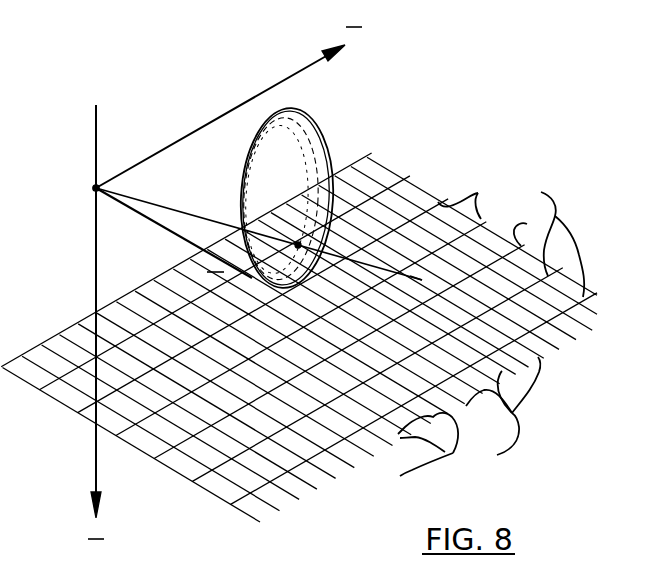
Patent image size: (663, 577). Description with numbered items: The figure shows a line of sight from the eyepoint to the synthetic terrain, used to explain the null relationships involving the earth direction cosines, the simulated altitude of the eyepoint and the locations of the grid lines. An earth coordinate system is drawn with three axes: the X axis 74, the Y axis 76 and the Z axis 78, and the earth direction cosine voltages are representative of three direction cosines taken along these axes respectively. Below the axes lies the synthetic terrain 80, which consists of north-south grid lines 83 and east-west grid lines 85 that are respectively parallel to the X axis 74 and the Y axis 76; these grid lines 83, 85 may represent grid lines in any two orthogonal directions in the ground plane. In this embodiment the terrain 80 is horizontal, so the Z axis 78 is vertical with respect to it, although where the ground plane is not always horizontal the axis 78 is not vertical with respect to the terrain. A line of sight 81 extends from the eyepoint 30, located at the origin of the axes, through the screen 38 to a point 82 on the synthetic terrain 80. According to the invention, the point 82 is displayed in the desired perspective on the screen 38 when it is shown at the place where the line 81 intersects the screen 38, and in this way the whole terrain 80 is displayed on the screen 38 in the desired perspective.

The eyepoint 30 is at (95, 187).
The X axis 74 is at (229, 106).
The Y axis 76 is at (181, 243).
The Z axis 78 is at (93, 467).
The screen 38 is at (331, 140).
The line of sight 81 is at (184, 207).
The point on the synthetic terrain 82 is at (422, 281).
The north-south grid lines 83 is at (478, 193).
The east-west grid lines 85 is at (453, 453).
The synthetic terrain 80 is at (216, 477).